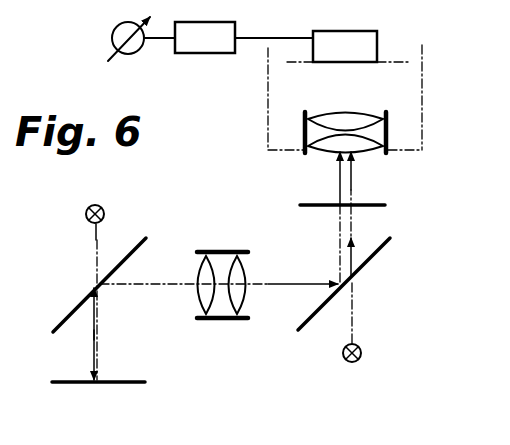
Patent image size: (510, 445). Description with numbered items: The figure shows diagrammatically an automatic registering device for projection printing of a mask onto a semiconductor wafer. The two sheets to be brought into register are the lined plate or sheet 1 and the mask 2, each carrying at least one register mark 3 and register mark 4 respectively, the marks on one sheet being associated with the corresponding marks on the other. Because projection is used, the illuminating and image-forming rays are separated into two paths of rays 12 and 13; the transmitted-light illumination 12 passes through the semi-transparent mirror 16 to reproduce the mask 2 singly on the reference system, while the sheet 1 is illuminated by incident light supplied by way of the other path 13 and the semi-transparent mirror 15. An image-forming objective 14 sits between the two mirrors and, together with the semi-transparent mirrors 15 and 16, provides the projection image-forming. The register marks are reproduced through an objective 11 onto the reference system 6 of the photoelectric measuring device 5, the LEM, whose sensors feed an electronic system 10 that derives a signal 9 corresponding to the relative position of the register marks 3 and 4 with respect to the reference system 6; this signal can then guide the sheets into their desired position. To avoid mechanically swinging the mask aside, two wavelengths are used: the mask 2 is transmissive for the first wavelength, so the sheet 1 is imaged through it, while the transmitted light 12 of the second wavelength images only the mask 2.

The sheet 1 is at (137, 380).
The mask 2 is at (386, 205).
The register mark 3 is at (84, 386).
The register mark 4 is at (345, 217).
The photoelectric measuring device 5 is at (422, 105).
The reference system 6 is at (377, 48).
The signal 9 is at (134, 57).
The electronic system 10 is at (205, 53).
The objective 11 is at (304, 121).
The path of rays (transmitted-light illumination) 12 is at (365, 322).
The path of rays 13 is at (88, 292).
The image-forming objective 14 is at (219, 300).
The semi-transparent mirror 15 is at (108, 275).
The semi-transparent mirror 16 is at (384, 248).